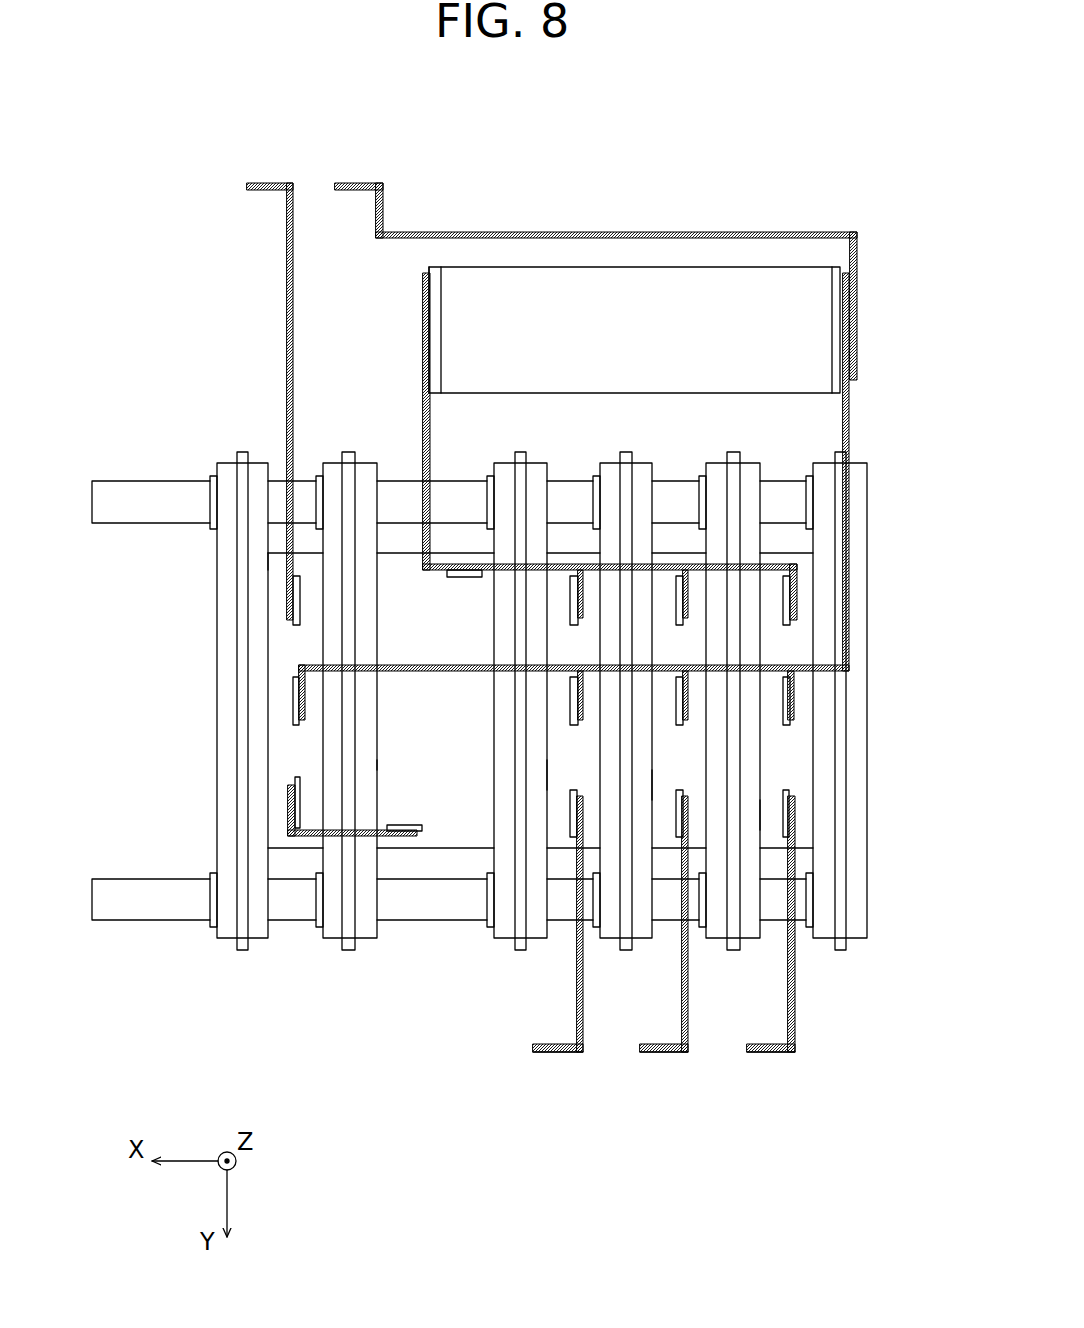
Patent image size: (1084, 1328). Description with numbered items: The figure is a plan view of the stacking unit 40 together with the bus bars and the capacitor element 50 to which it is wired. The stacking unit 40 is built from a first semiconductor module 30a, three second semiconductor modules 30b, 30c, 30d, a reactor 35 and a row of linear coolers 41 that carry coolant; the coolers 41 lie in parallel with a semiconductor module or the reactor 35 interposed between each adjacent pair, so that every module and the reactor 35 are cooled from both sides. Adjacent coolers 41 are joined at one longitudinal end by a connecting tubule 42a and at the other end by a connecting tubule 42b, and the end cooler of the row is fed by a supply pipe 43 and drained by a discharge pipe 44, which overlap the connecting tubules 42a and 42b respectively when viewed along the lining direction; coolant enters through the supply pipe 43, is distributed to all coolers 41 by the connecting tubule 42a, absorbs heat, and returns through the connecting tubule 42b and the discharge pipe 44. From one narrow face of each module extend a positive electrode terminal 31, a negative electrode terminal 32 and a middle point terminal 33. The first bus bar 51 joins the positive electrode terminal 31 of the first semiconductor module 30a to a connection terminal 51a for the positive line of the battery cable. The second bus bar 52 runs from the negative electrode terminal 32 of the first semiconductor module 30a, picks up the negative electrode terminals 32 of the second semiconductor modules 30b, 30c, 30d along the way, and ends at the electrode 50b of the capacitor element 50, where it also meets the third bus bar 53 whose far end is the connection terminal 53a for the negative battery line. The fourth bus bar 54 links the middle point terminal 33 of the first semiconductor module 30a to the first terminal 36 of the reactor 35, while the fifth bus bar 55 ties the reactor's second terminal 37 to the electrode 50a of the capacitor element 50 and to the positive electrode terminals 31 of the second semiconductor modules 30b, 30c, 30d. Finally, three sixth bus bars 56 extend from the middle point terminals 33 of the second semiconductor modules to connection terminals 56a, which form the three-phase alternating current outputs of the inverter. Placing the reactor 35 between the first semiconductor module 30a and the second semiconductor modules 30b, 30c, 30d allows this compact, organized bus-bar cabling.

The first semiconductor module 30a is at (277, 590).
The second semiconductor module 30b is at (550, 773).
The second semiconductor module 30c is at (693, 785).
The second semiconductor module 30d is at (806, 818).
The positive electrode terminal 31 is at (297, 626).
The negative electrode terminal 32 is at (293, 690).
The middle point terminal 33 is at (293, 780).
The reactor 35 is at (392, 766).
The first terminal 36 is at (427, 830).
The second terminal 37 is at (447, 577).
The stacking unit 40 is at (137, 365).
The cooler 41 is at (228, 463).
The connecting tubule 42a is at (270, 462).
The connecting tubule 42b is at (293, 920).
The supply pipe 43 is at (135, 481).
The discharge pipe 44 is at (150, 908).
The capacitor element 50 is at (670, 293).
The electrode 50a is at (435, 273).
The electrode 50b is at (838, 270).
The first bus bar 51 is at (285, 280).
The connection terminal 51a is at (267, 183).
The second bus bar 52 is at (851, 575).
The third bus bar 53 is at (577, 232).
The connection terminal 53a is at (355, 183).
The fourth bus bar 54 is at (285, 795).
The fifth bus bar 55 is at (422, 350).
The sixth bus bar 56 is at (584, 1010).
The connection terminal 56a is at (558, 1053).